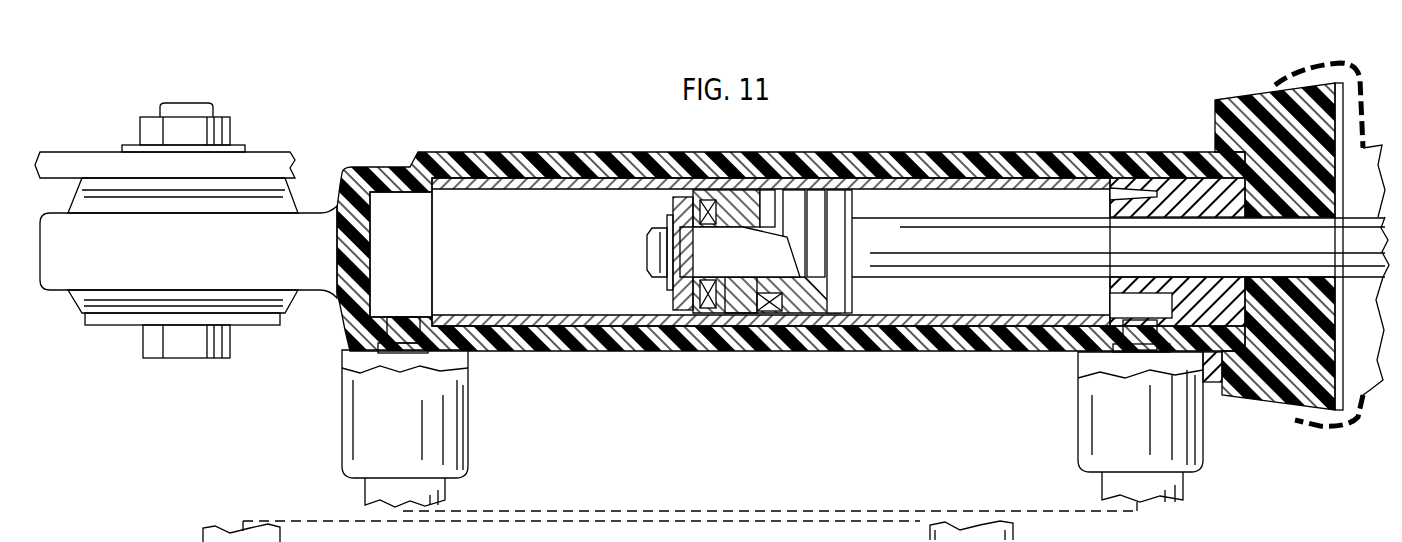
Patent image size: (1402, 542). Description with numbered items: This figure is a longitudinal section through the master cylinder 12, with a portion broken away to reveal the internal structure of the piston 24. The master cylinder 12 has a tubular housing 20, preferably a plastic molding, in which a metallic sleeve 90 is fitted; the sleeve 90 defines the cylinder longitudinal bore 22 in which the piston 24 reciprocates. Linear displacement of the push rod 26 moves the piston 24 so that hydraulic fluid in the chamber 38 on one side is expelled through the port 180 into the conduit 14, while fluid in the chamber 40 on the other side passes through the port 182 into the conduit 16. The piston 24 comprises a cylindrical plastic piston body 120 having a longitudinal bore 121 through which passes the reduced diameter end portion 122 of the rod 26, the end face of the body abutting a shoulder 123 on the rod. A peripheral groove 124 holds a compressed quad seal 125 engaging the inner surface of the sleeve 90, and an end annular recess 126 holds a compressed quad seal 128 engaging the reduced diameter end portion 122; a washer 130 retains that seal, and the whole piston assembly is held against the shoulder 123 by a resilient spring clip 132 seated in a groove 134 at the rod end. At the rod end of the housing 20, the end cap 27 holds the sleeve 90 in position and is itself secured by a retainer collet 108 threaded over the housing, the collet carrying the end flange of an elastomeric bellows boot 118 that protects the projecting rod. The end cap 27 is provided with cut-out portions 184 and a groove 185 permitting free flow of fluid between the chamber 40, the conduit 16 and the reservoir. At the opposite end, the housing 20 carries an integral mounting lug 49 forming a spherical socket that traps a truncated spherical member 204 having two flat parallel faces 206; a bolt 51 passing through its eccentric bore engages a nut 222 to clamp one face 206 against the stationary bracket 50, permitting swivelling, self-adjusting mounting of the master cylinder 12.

The master cylinder 12 is at (547, 353).
The conduit 14 is at (367, 497).
The conduit 16 is at (1183, 487).
The tubular housing 20 is at (890, 351).
The cylinder longitudinal bore 22 is at (565, 318).
The piston 24 is at (850, 297).
The push rod 26 is at (997, 225).
The end cap 27 is at (1160, 180).
The chamber 38 is at (455, 203).
The chamber 40 is at (878, 200).
The mounting lug 49 is at (62, 277).
The stationary bracket 50 is at (263, 157).
The bolt 51 is at (213, 107).
The metallic sleeve 90 is at (926, 335).
The retainer collet 108 is at (1258, 400).
The bellows boot 118 is at (1355, 410).
The piston body 120 is at (840, 238).
The longitudinal bore 121 is at (748, 268).
The reduced diameter end portion 122 is at (652, 243).
The shoulder 123 is at (845, 262).
The peripheral groove 124 is at (752, 320).
The quad seal 125 is at (773, 320).
The end annular recess 126 is at (700, 320).
The quad seal 128 is at (700, 200).
The washer 130 is at (675, 318).
The resilient spring clip 132 is at (673, 283).
The groove 134 is at (667, 257).
The port 180 is at (397, 327).
The port 182 is at (1133, 330).
The cut-out portions 184 is at (1133, 299).
The groove 185 is at (1110, 195).
The truncated spherical member 204 is at (133, 298).
The flat parallel faces 206 is at (97, 170).
The nut 222 is at (230, 133).